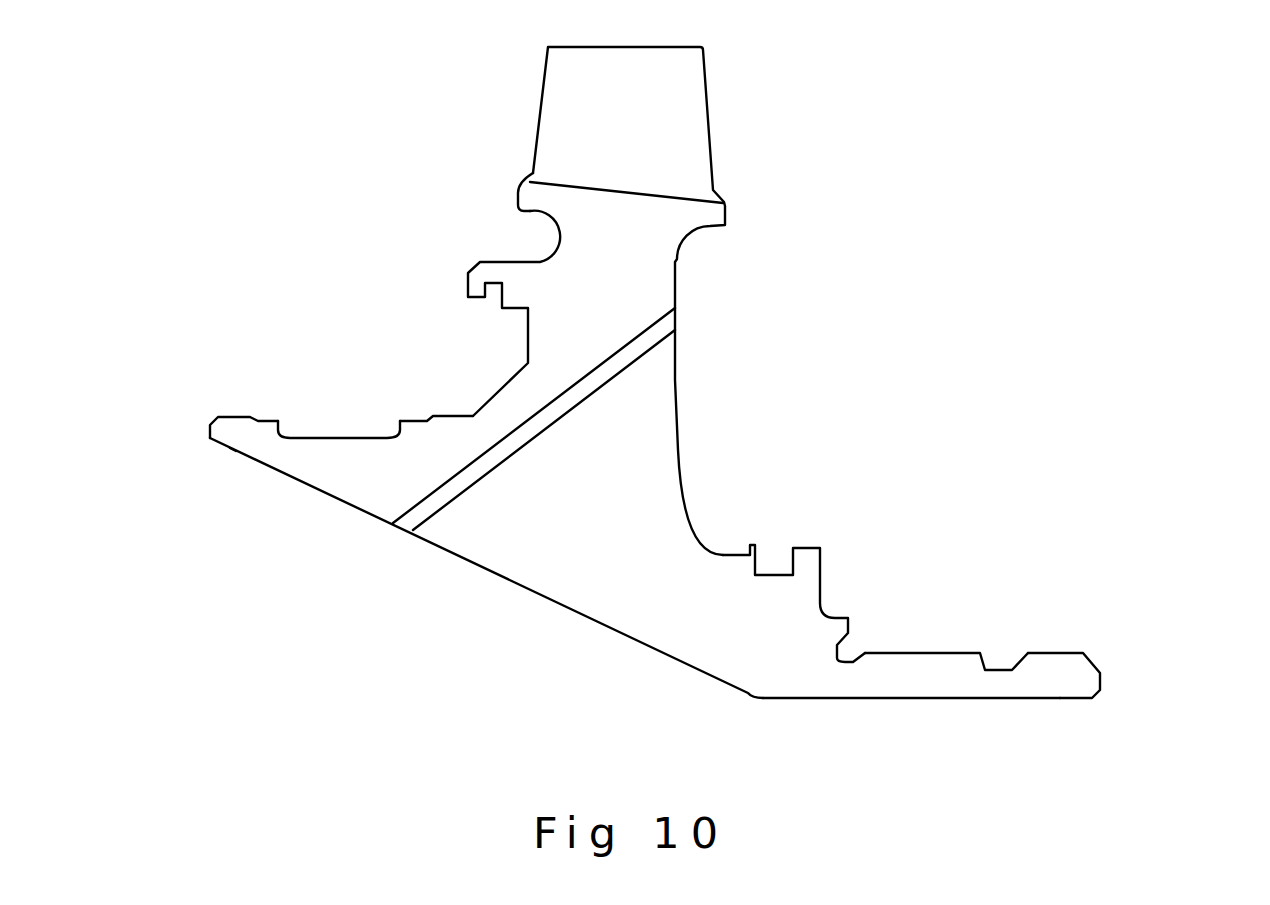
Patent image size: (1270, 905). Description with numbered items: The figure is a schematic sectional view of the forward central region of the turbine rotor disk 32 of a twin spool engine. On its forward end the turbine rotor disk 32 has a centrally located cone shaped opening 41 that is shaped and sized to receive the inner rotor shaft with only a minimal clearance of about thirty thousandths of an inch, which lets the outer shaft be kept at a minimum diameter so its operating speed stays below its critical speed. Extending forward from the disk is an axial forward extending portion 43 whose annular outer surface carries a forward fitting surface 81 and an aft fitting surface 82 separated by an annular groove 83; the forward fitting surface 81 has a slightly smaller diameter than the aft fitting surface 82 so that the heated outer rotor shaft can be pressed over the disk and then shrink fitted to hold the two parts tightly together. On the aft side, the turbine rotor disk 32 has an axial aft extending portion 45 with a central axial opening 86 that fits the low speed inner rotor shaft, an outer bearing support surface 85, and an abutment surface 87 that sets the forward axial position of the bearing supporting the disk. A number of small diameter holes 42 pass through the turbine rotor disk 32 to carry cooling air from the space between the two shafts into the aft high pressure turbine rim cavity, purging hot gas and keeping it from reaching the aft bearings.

The turbine rotor disk 32 is at (657, 535).
The cone shaped opening 41 is at (498, 575).
The holes 42 is at (630, 367).
The axial forward extending portion 43 is at (335, 467).
The axial aft extending portion 45 is at (1063, 677).
The forward fitting surface 81 is at (238, 415).
The aft fitting surface 82 is at (455, 417).
The annular groove 83 is at (338, 421).
The outer bearing support surface 85 is at (927, 653).
The central axial opening 86 is at (895, 698).
The abutment surface 87 is at (848, 618).